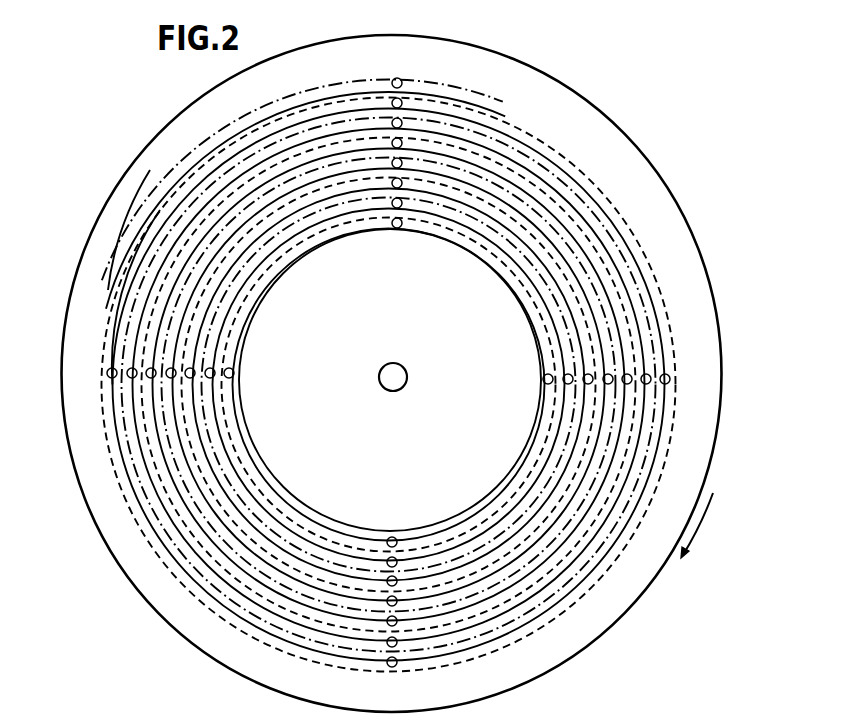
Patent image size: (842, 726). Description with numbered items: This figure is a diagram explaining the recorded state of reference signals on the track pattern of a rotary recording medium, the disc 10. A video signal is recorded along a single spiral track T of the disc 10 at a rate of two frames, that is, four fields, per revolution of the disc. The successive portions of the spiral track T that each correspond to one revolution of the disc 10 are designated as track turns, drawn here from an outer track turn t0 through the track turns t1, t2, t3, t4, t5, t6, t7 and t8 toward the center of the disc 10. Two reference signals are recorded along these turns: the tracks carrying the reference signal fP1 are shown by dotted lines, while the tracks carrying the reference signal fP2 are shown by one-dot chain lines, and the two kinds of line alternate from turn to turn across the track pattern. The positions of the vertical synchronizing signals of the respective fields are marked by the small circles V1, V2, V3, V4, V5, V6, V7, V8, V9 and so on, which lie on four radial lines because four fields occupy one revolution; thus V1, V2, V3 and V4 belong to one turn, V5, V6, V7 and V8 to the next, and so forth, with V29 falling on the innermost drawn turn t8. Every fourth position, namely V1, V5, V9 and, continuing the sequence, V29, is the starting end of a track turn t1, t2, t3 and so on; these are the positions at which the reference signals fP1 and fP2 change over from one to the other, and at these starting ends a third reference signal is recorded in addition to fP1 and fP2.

The disc 10 is at (703, 256).
The spiral track T is at (212, 150).
The track turn t0 is at (486, 98).
The track turn t1 is at (320, 95).
The track turn t2 is at (349, 100).
The track turn t3 is at (282, 150).
The track turn t4 is at (233, 217).
The track turn t5 is at (274, 204).
The track turn t6 is at (263, 247).
The track turn t7 is at (243, 301).
The track turn t8 is at (349, 236).
The reference signal fP1 is at (128, 251).
The reference signal fP2 is at (137, 283).
The vertical synchronizing signal position V1 is at (402, 84).
The vertical synchronizing signal position V2 is at (107, 374).
The vertical synchronizing signal position V3 is at (386, 662).
The vertical synchronizing signal position V4 is at (671, 379).
The vertical synchronizing signal position V5 is at (402, 105).
The vertical synchronizing signal position V6 is at (132, 379).
The vertical synchronizing signal position V7 is at (386, 642).
The vertical synchronizing signal position V8 is at (650, 384).
The vertical synchronizing signal position V9 is at (402, 124).
The vertical synchronizing signal position V29 is at (398, 230).